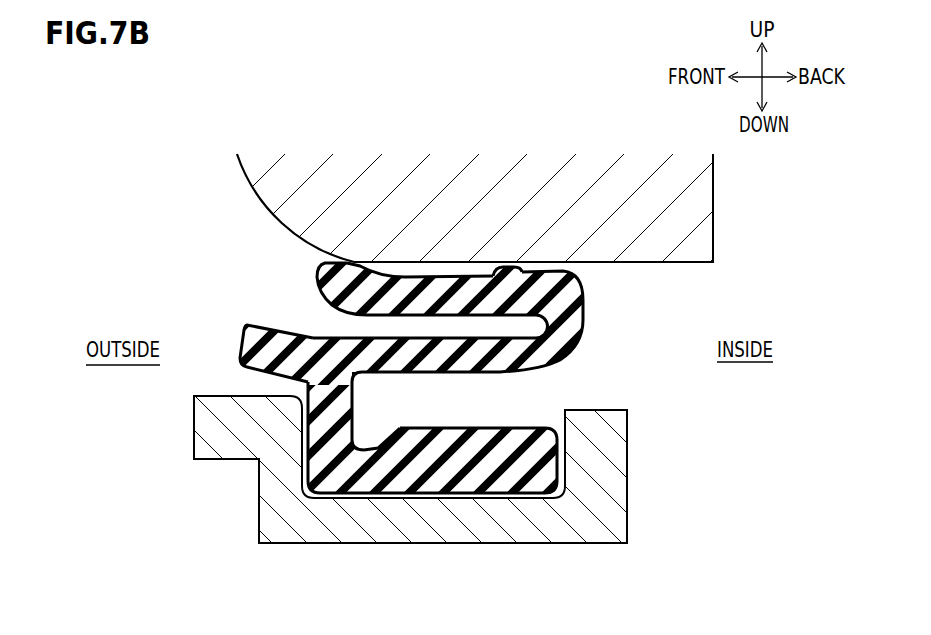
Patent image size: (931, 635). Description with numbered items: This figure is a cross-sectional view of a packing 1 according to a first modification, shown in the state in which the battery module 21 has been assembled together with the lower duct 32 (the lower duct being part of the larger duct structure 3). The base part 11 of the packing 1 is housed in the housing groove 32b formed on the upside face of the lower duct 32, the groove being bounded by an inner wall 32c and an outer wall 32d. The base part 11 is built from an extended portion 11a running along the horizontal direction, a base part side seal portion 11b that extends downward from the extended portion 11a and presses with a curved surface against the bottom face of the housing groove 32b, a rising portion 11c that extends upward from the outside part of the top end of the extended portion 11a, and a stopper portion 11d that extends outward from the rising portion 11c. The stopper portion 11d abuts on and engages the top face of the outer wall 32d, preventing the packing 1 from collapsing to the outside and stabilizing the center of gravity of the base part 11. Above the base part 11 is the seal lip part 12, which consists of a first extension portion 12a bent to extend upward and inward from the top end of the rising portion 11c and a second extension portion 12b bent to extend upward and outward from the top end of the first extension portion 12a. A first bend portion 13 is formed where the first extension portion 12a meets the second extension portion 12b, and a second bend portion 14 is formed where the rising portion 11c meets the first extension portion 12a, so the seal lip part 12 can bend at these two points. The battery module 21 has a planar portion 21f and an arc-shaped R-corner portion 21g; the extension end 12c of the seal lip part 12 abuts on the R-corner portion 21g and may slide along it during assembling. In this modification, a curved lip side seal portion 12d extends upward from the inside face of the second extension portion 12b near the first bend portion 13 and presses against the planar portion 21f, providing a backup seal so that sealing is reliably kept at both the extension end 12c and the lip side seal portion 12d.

The packing 1 is at (465, 371).
The base part 11 is at (401, 430).
The extended portion 11a is at (437, 478).
The base part side seal portion 11b is at (382, 495).
The rising portion 11c is at (348, 428).
The stopper portion 11d is at (280, 333).
The seal lip part 12 is at (441, 267).
The first extension portion 12a is at (482, 367).
The second extension portion 12b is at (447, 290).
The extension end 12c is at (337, 260).
The lip side seal portion 12d is at (508, 266).
The first bend portion 13 is at (585, 317).
The second bend portion 14 is at (358, 376).
The battery module 21 is at (503, 217).
The planar portion 21f is at (688, 264).
The R-corner portion 21g is at (262, 213).
The vehicle body 3 is at (410, 469).
The lower duct 32 is at (381, 464).
The housing groove 32b is at (476, 498).
The inner wall 32c is at (621, 457).
The outer wall 32d is at (230, 450).